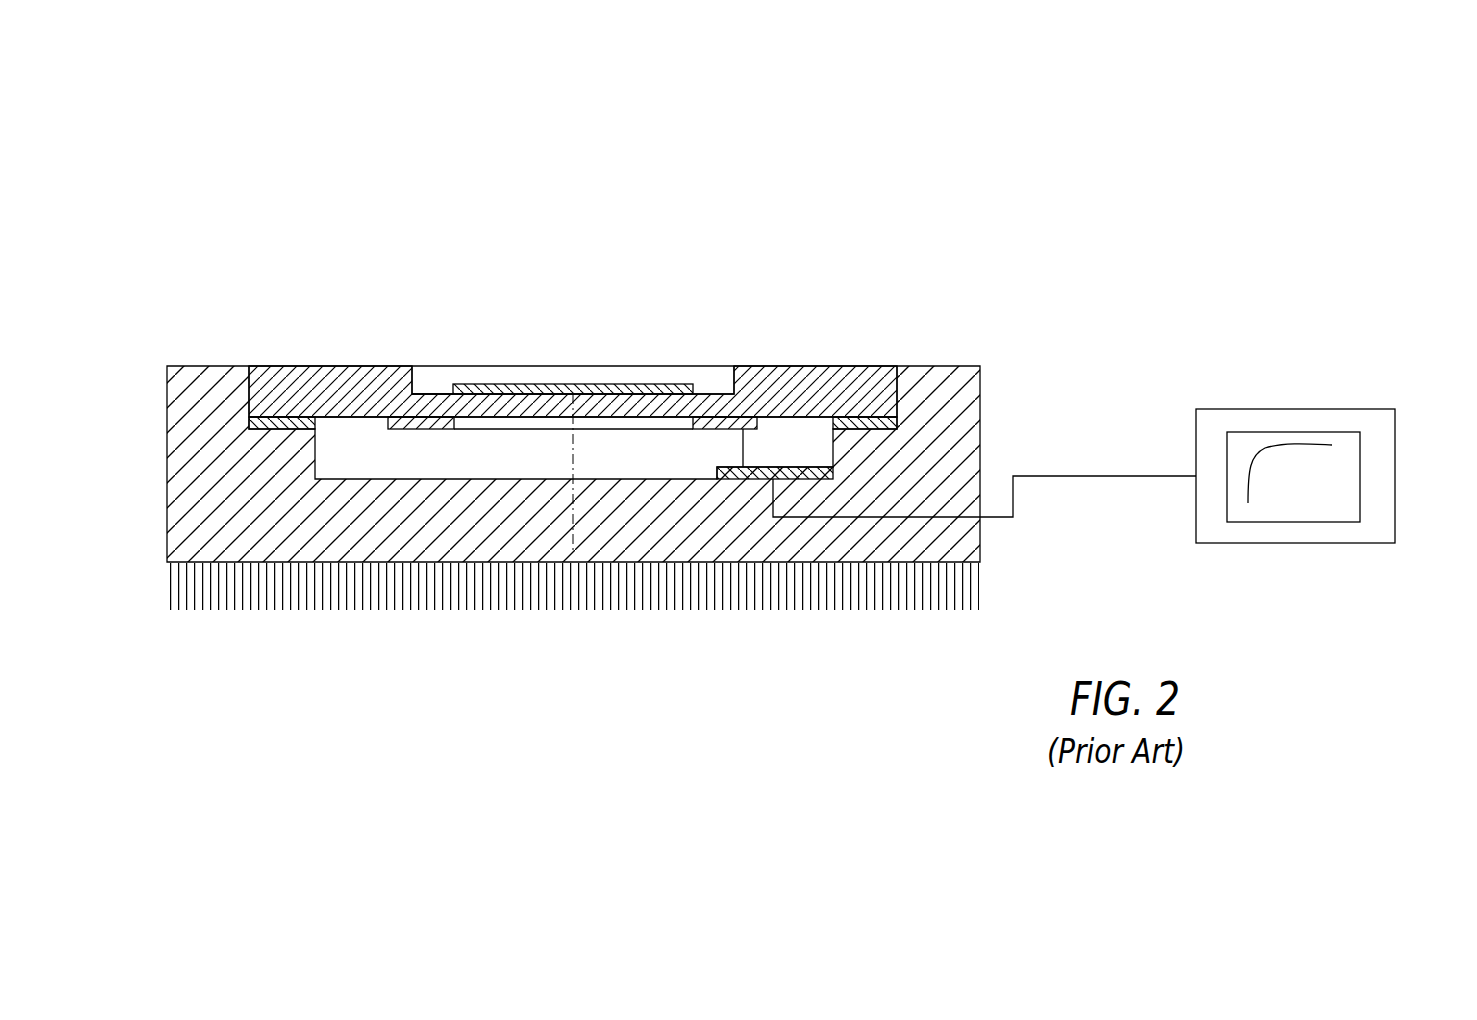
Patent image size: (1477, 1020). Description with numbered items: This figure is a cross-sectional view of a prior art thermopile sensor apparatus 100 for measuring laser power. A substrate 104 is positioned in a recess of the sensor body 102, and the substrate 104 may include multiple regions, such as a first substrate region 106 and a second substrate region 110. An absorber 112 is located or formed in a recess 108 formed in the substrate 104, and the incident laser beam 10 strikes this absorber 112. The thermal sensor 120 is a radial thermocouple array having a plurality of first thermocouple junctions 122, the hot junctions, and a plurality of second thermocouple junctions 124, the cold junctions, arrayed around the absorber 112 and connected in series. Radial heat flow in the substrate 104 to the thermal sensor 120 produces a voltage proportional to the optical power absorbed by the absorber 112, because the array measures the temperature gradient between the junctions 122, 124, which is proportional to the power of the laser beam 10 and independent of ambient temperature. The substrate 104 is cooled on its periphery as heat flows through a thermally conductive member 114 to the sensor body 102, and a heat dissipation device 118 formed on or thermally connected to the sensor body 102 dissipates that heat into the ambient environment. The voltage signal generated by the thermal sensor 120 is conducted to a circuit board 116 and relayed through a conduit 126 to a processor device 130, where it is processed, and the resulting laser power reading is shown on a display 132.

The thermopile sensor apparatus 100 is at (531, 359).
The sensor body 102 is at (167, 456).
The substrate 104 is at (310, 366).
The first substrate region 106 is at (388, 342).
The recess 108 is at (440, 378).
The second substrate region 110 is at (472, 343).
The incident laser beam 10 is at (573, 384).
The absorber 112 is at (523, 384).
The thermally conductive member 114 is at (288, 418).
The circuit board 116 is at (730, 469).
The heat dissipation device 118 is at (168, 585).
The thermal sensor 120 is at (738, 418).
The first thermocouple junctions 122 is at (700, 418).
The second thermocouple junctions 124 is at (750, 418).
The conduit 126 is at (1105, 476).
The processor device 130 is at (1295, 409).
The display 132 is at (1360, 477).